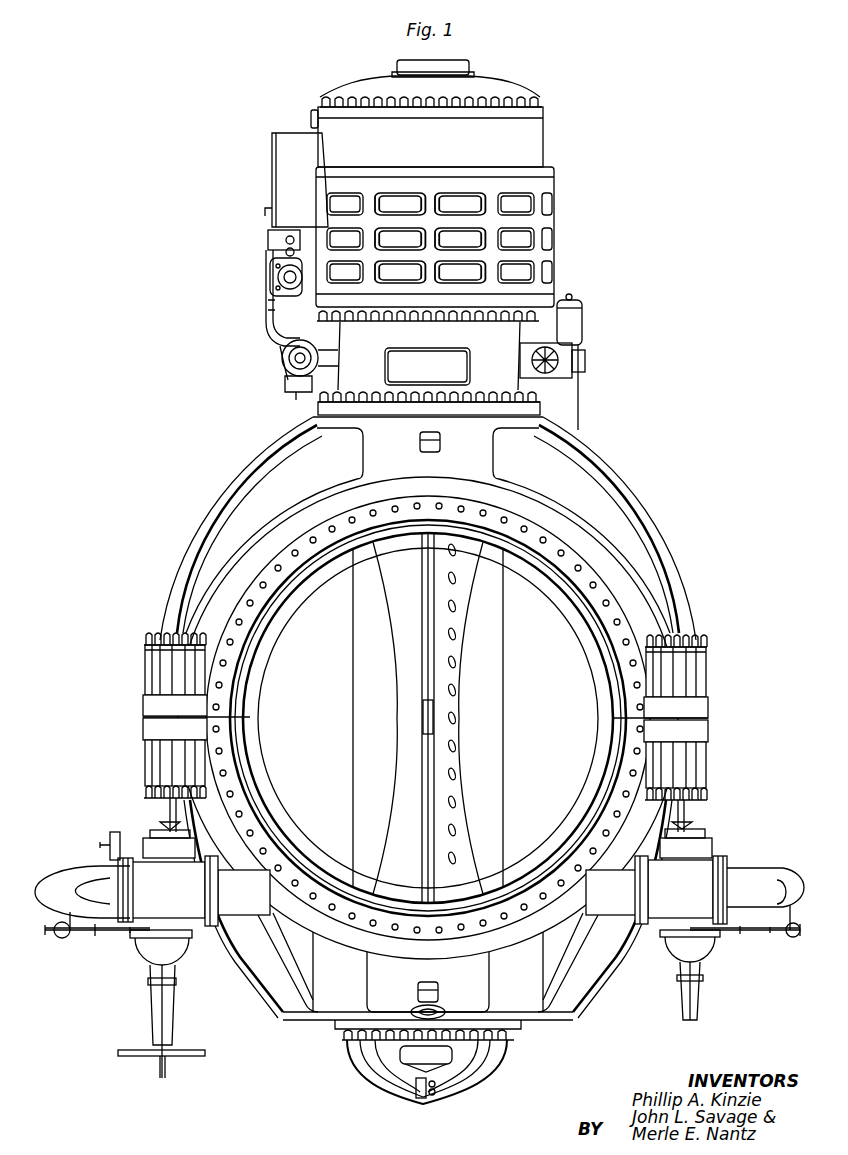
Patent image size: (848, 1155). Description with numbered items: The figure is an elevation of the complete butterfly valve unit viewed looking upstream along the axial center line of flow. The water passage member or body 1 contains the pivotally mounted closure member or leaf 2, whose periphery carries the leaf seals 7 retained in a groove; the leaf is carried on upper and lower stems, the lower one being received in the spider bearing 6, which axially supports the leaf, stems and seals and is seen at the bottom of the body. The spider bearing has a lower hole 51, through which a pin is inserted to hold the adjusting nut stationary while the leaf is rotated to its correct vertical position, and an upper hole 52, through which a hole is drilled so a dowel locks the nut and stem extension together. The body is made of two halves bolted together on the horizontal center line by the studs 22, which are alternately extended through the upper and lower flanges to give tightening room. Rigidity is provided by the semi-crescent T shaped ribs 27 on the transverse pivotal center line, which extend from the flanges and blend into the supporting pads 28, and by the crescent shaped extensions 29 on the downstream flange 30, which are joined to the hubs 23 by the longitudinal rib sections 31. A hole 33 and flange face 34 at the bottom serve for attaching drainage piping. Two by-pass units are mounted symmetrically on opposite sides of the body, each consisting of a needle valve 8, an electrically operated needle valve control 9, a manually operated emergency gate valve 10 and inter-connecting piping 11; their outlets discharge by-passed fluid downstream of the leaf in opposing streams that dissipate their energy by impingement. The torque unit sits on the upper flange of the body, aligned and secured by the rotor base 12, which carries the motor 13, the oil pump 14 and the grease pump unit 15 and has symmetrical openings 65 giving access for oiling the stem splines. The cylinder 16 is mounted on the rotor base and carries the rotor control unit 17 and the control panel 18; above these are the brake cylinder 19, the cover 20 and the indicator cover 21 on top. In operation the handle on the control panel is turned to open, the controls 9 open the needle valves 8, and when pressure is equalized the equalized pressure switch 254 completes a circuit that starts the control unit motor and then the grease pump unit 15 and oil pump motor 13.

The body 1 is at (640, 527).
The leaf 2 is at (490, 717).
The spider bearing 6 is at (357, 1068).
The leaf seals 7 is at (422, 732).
The needle valves 8 is at (190, 915).
The electrically operated needle valve controls 9 is at (145, 834).
The manually operated emergency gate valves 10 is at (148, 1018).
The inter-connecting piping 11 is at (60, 876).
The rotor base 12 is at (384, 334).
The motor 13 is at (283, 348).
The oil pump 14 is at (283, 360).
The grease pump unit 15 is at (582, 334).
The cylinder 16 is at (555, 240).
The rotor control unit 17 is at (268, 240).
The control panel 18 is at (284, 181).
The brake cylinder 19 is at (545, 143).
The cover 20 is at (520, 93).
The indicator cover 21 is at (460, 73).
The studs 22 is at (148, 640).
The hubs 23 is at (495, 453).
The semi-crescent T shaped ribs 27 is at (240, 488).
The supporting pads 28 is at (306, 1028).
The crescent shaped extensions 29 is at (313, 497).
The downstream flange 30 is at (583, 582).
The longitudinal rib sections 31 is at (382, 448).
The hole 33 is at (440, 1012).
The flange face 34 is at (413, 1012).
The lower hole 51 is at (412, 1100).
The upper hole 52 is at (436, 1090).
The openings 65 is at (395, 378).
The equalized pressure switch 254 is at (112, 840).